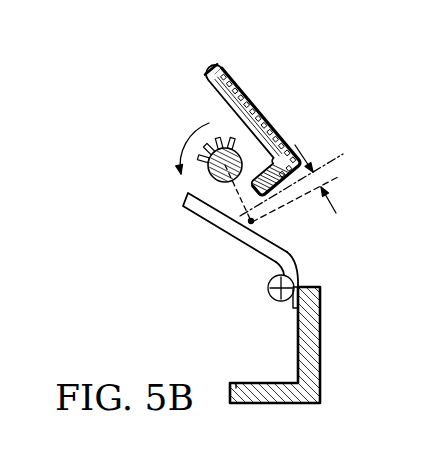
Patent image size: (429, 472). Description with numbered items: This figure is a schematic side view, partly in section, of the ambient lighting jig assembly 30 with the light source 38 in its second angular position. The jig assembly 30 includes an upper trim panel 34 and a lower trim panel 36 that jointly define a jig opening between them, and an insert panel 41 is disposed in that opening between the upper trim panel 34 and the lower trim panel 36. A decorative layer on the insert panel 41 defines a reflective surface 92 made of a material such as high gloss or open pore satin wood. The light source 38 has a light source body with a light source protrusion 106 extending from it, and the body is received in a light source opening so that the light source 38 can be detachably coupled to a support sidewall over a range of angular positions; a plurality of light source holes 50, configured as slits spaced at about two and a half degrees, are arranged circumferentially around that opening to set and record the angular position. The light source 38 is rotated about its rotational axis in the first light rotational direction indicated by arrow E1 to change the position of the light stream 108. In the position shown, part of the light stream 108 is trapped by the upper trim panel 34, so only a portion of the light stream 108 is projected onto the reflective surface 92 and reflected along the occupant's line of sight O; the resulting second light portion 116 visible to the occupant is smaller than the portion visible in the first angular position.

The jig assembly 30 is at (207, 63).
The upper trim panel 34 is at (251, 102).
The lower trim panel 36 is at (321, 345).
The light source 38 is at (212, 178).
The insert panel 41 is at (260, 250).
The light source holes 50 is at (205, 157).
The reflective surface 92 is at (292, 245).
The light source protrusion 106 is at (217, 140).
The light stream 108 is at (245, 196).
The second light portion 116 is at (336, 213).
The first light rotational direction E1 is at (184, 147).
The occupant's line of sight O is at (342, 153).